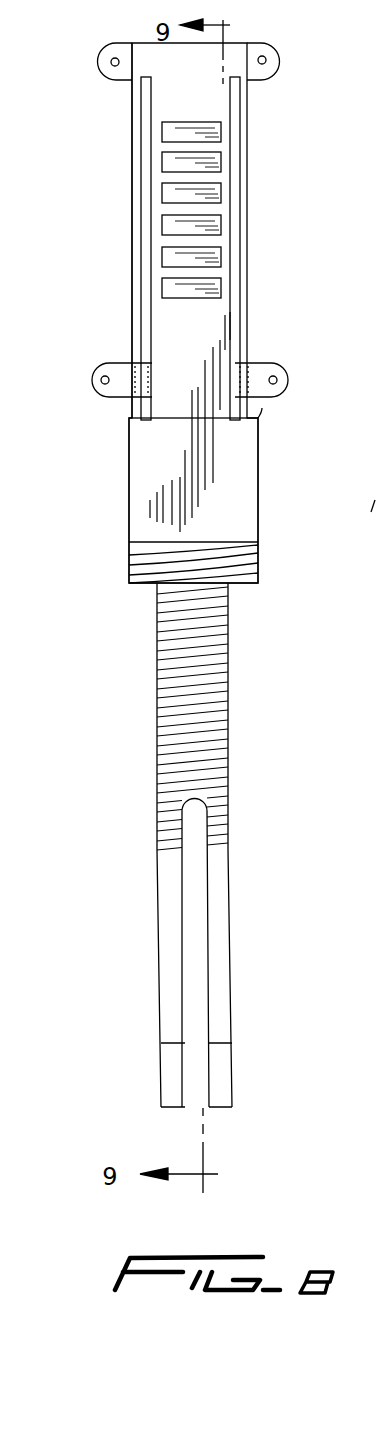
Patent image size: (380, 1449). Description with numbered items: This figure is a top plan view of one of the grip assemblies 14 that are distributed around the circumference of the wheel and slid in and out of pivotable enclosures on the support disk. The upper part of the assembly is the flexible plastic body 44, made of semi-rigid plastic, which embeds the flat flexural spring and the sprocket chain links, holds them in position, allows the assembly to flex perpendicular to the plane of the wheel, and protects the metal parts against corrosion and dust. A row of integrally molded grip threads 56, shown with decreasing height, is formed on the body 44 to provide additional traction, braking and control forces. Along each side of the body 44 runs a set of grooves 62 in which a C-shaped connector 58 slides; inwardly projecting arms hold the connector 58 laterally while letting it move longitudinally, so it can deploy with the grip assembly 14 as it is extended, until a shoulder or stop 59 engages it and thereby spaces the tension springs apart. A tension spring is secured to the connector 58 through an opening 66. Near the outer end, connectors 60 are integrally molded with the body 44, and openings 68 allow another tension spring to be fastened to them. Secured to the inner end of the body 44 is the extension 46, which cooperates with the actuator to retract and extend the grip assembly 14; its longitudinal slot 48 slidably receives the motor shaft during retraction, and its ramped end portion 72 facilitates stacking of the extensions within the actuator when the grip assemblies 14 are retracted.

The grip assembly 14 is at (252, 237).
The flexible plastic body 44 is at (250, 513).
The extension 46 is at (230, 740).
The longitudinal slot 48 is at (200, 945).
The grip threads 56 is at (220, 167).
The connector 58 is at (277, 380).
The shoulder or stop 59 is at (262, 414).
The connector 60 is at (111, 62).
The grooves 62 is at (237, 317).
The opening 66 is at (102, 384).
The opening 68 is at (100, 80).
The end portion 72 is at (225, 1082).